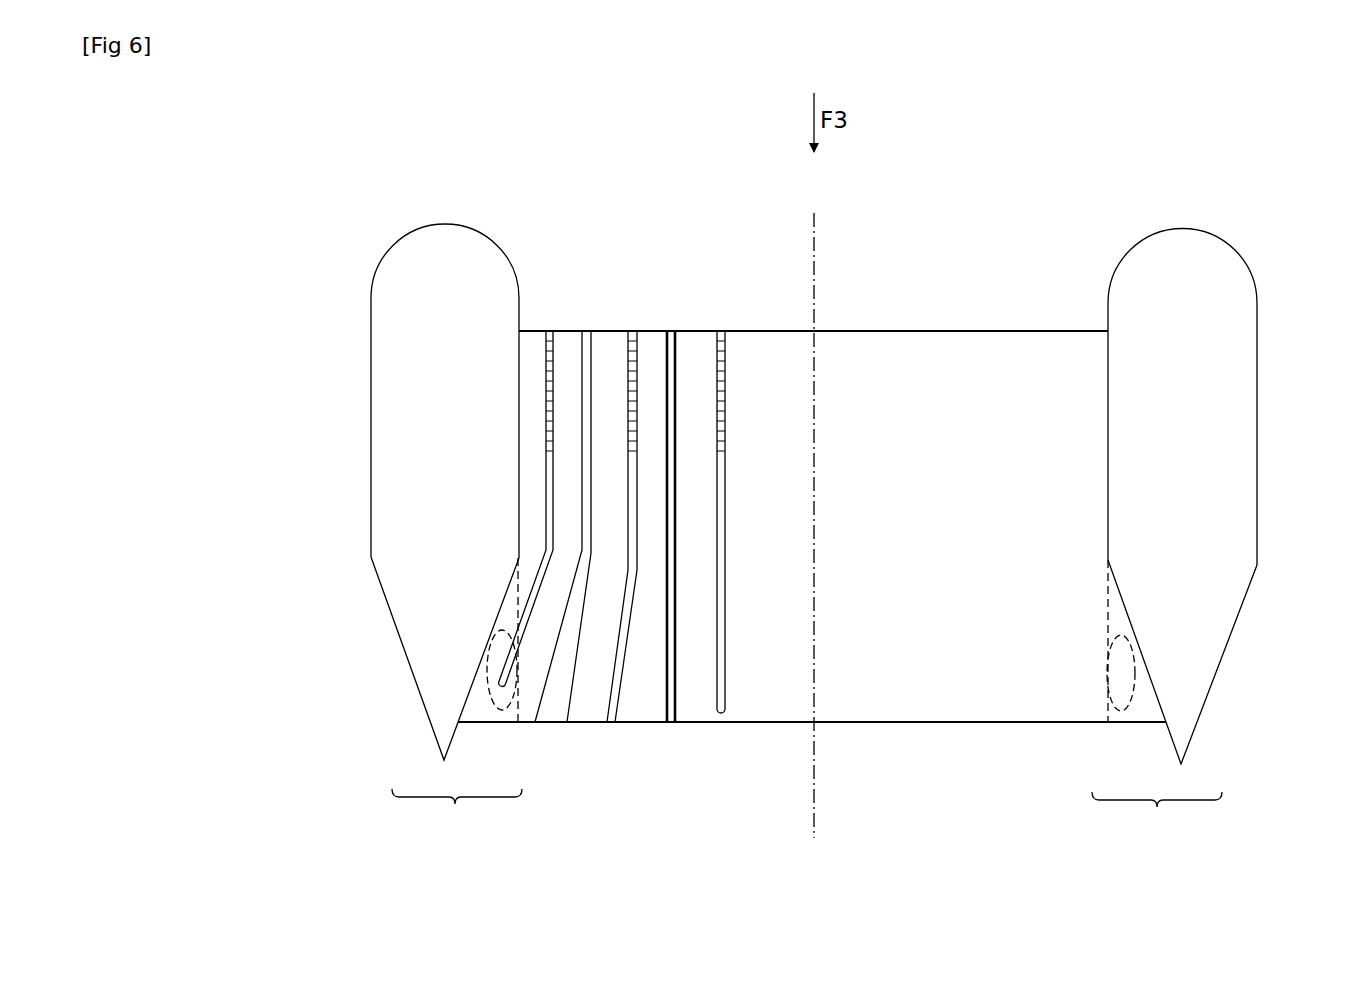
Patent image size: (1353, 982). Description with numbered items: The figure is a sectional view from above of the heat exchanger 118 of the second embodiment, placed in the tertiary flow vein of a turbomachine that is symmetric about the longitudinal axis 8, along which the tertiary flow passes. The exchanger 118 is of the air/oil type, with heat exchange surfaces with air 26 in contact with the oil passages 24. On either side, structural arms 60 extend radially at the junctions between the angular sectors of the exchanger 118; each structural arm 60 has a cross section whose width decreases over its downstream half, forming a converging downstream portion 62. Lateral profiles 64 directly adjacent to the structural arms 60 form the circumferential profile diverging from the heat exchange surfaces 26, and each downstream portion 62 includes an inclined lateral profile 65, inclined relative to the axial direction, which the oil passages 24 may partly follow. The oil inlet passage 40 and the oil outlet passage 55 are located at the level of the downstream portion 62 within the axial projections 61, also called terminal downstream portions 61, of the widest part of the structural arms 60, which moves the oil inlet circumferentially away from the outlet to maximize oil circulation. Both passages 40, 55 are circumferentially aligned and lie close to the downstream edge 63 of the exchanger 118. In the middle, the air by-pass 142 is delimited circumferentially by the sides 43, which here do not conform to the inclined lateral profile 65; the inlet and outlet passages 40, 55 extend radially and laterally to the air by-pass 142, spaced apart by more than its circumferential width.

The longitudinal axis 8 is at (816, 757).
The oil passages 24 is at (551, 336).
The heat exchange surfaces with air 26 is at (610, 340).
The oil inlet passage 40 is at (492, 709).
The sides 43 is at (1108, 612).
The oil outlet passage 55 is at (1120, 712).
The structural arm 60 is at (812, 528).
The axial projections (terminal downstream portions) 61 is at (456, 815).
The converging downstream portion 62 is at (382, 747).
The downstream edge 63 is at (955, 724).
The lateral profile 64 is at (517, 349).
The inclined lateral profile 65 is at (812, 697).
The heat exchanger 118 is at (812, 472).
The air by-pass 142 is at (852, 316).